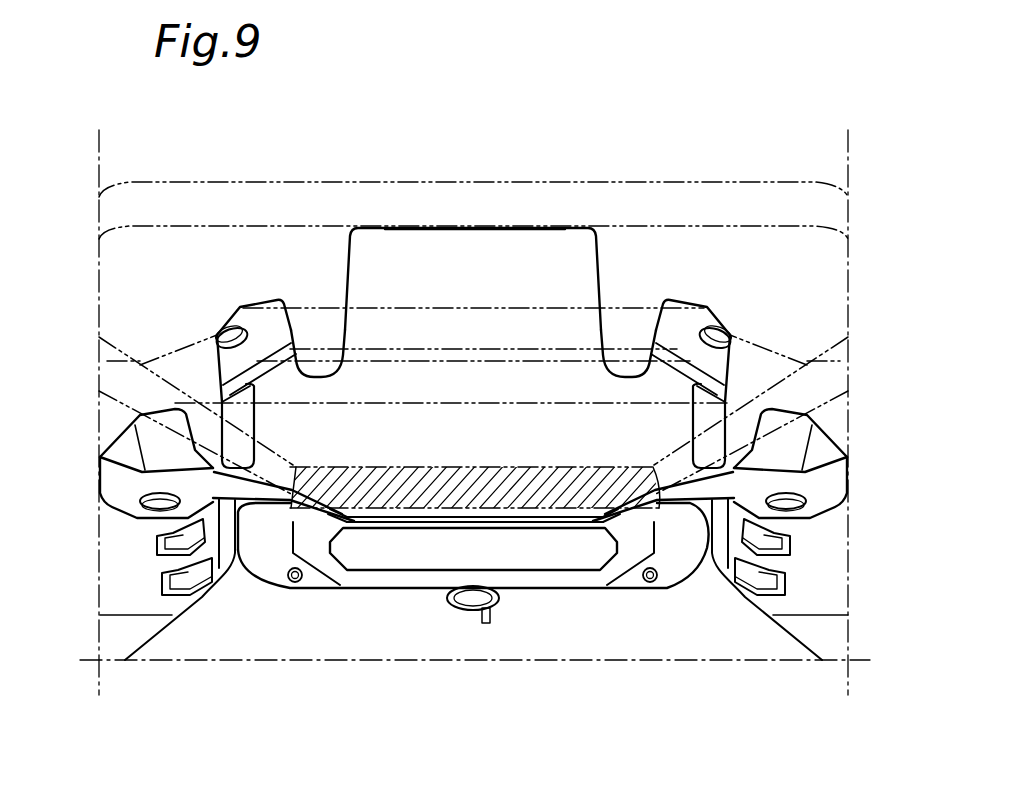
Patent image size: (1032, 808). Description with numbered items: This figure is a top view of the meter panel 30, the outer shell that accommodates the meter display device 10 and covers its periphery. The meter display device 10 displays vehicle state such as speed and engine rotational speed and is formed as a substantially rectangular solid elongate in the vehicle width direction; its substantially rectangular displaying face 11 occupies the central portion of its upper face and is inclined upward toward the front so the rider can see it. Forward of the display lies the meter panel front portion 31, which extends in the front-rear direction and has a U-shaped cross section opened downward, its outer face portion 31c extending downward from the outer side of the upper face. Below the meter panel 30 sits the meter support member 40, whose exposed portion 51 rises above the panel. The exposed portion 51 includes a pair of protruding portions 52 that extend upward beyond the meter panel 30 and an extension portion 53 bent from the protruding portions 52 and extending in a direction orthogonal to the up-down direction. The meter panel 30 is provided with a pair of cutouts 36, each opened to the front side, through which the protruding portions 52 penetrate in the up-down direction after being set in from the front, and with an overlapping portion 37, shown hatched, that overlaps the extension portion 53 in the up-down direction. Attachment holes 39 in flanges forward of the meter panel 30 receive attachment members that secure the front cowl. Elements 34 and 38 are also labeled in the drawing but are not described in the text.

The meter display device 10 is at (383, 600).
The displaying face 11 is at (404, 552).
The meter panel 30 is at (838, 633).
The meter panel front portion 31 is at (437, 245).
The outer face portion 31c is at (481, 248).
The mounting band 34 is at (537, 520).
The cutouts 36 is at (256, 420).
The overlapping portion 37 is at (441, 487).
The bracket leg 38 is at (347, 323).
The attachment holes 39 is at (243, 328).
The meter support member 40 is at (325, 515).
The exposed portion 51 is at (479, 528).
The protruding portions 52 is at (140, 414).
The extension portion 53 is at (588, 512).